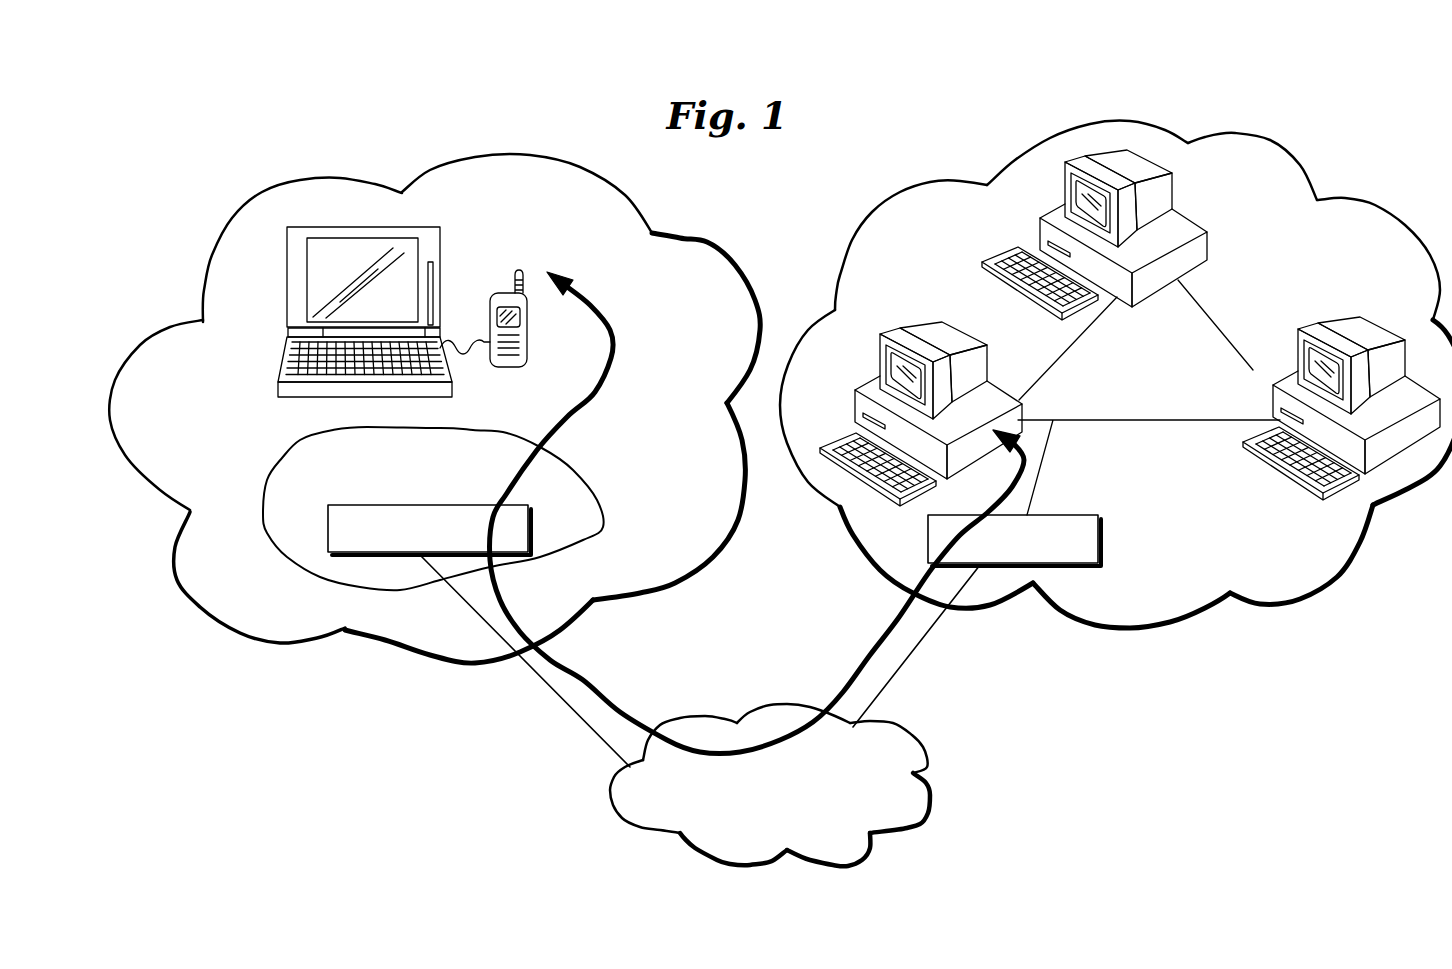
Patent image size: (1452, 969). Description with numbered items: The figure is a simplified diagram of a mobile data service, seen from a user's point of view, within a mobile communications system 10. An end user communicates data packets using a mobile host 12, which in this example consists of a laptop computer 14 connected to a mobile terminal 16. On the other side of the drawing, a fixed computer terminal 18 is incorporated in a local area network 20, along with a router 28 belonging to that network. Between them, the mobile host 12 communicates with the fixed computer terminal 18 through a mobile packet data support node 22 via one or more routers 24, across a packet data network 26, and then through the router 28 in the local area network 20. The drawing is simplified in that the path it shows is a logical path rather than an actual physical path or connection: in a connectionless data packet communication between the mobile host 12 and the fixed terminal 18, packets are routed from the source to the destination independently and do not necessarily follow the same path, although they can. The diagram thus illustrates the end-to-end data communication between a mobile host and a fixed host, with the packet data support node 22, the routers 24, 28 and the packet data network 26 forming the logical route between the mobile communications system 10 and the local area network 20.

The mobile communications system 10 is at (705, 247).
The mobile host 12 is at (401, 291).
The laptop computer 14 is at (293, 288).
The mobile terminal 16 is at (520, 270).
The fixed computer terminal 18 is at (930, 342).
The local area network 20 is at (1197, 623).
The mobile packet data support node 22 is at (280, 470).
The router 24 is at (328, 533).
The packet data network 26 is at (930, 793).
The router 28 is at (1083, 517).